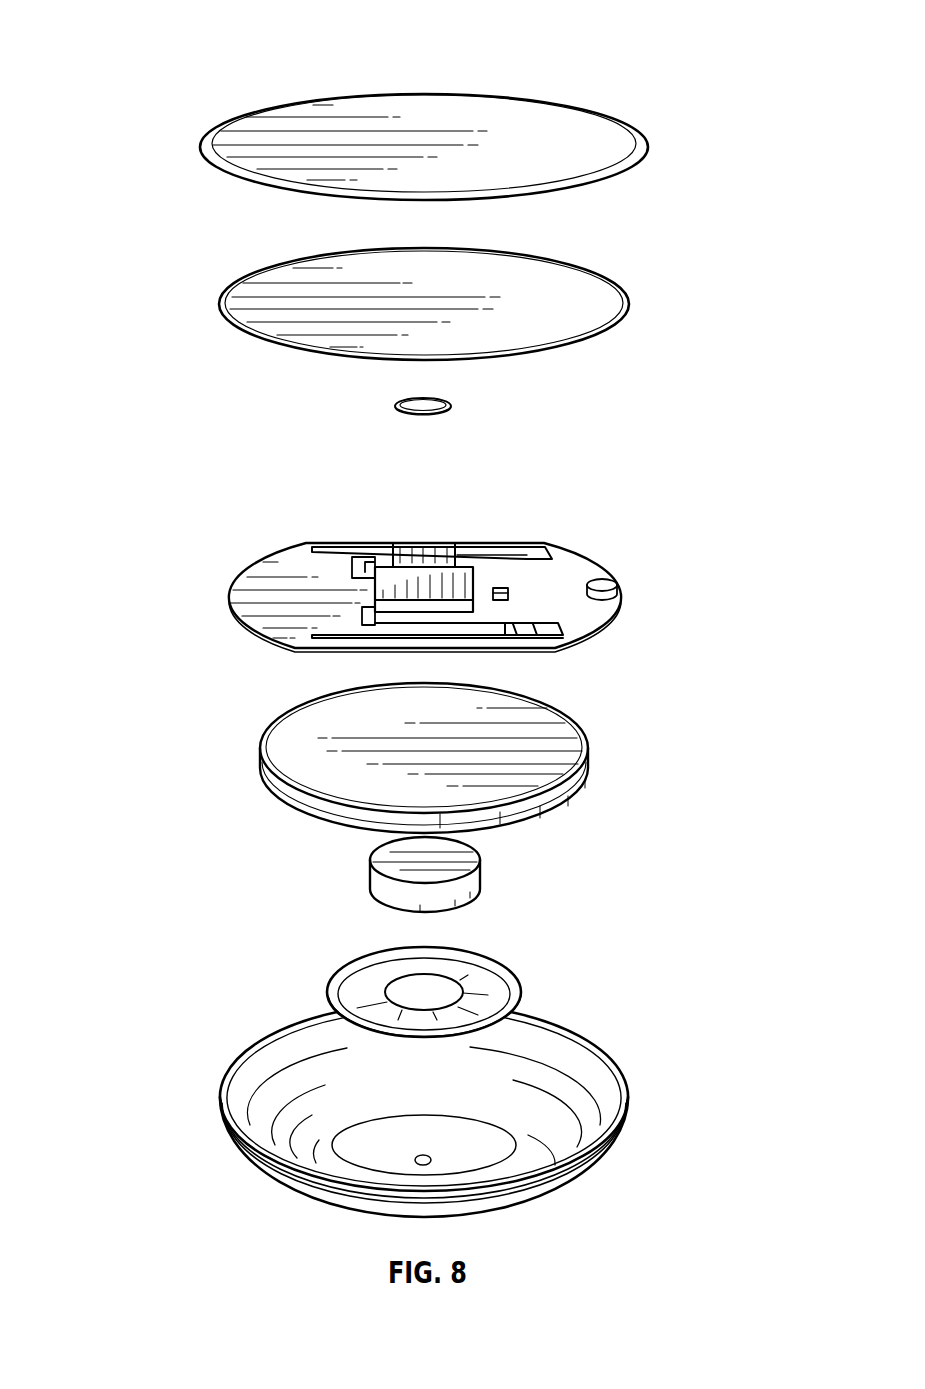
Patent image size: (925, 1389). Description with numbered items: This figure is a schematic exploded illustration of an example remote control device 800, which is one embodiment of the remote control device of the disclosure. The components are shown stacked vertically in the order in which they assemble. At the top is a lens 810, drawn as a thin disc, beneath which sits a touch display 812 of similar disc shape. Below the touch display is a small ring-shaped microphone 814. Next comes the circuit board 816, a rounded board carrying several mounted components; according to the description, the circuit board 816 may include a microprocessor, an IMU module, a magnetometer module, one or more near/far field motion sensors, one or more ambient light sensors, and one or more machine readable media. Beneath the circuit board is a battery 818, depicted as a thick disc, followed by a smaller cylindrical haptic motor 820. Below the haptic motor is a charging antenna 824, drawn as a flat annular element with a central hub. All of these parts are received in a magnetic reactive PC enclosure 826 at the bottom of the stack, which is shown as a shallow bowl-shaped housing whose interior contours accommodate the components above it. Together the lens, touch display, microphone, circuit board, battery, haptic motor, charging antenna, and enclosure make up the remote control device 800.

The remote control device 800 is at (120, 44).
The lens 810 is at (200, 147).
The touch display 812 is at (223, 315).
The microphone 814 is at (397, 404).
The circuit board 816 is at (230, 606).
The battery 818 is at (264, 770).
The haptic motor 820 is at (372, 883).
The charging antenna 824 is at (328, 997).
The magnetic reactive PC enclosure 826 is at (222, 1100).